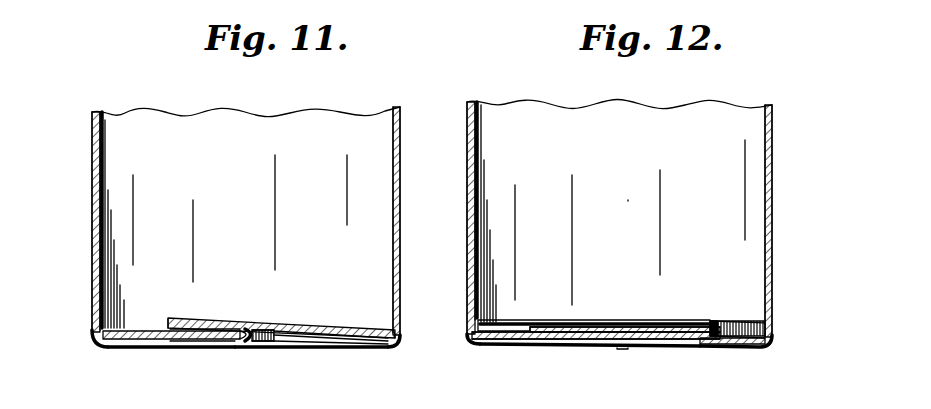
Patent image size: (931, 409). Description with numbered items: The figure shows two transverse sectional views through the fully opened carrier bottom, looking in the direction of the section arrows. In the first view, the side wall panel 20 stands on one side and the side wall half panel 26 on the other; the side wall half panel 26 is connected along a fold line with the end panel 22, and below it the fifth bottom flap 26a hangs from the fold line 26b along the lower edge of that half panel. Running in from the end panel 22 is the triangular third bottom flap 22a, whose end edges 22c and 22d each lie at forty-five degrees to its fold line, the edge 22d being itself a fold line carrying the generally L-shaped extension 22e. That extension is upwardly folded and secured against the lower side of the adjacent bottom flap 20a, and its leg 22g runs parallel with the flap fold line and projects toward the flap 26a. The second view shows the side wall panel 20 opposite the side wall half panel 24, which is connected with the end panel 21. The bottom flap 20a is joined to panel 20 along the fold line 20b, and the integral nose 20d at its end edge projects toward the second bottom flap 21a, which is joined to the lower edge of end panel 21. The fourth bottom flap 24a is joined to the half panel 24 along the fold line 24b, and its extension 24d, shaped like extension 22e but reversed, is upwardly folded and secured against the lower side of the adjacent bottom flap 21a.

In FIG. 11, the side wall panel 20 is at (399, 175).
In FIG. 12, the side wall panel 20 is at (467, 238).
In FIG. 11, the bottom flap 20a is at (290, 318).
In FIG. 12, the bottom flap 20a is at (536, 340).
In FIG. 11, the fold line 20b is at (396, 350).
In FIG. 12, the fold line 20b is at (467, 343).
In FIG. 12, the nose 20d is at (634, 348).
In FIG. 12, the end wall panel 21 is at (627, 175).
In FIG. 12, the bottom flap 21a is at (590, 322).
In FIG. 11, the end wall panel 22 is at (211, 230).
In FIG. 11, the bottom flap 22a is at (238, 340).
In FIG. 11, the end edge 22c is at (160, 347).
In FIG. 11, the end edge 22d is at (327, 348).
In FIG. 11, the extension 22e is at (290, 346).
In FIG. 11, the leg 22g is at (193, 347).
In FIG. 12, the side wall half panel 24 is at (774, 224).
In FIG. 12, the bottom flap 24a is at (650, 344).
In FIG. 12, the fold line 24b is at (771, 346).
In FIG. 12, the extension 24d is at (713, 330).
In FIG. 11, the side wall half panel 26 is at (98, 197).
In FIG. 11, the bottom flap 26a is at (122, 349).
In FIG. 11, the fold line 26b is at (92, 336).